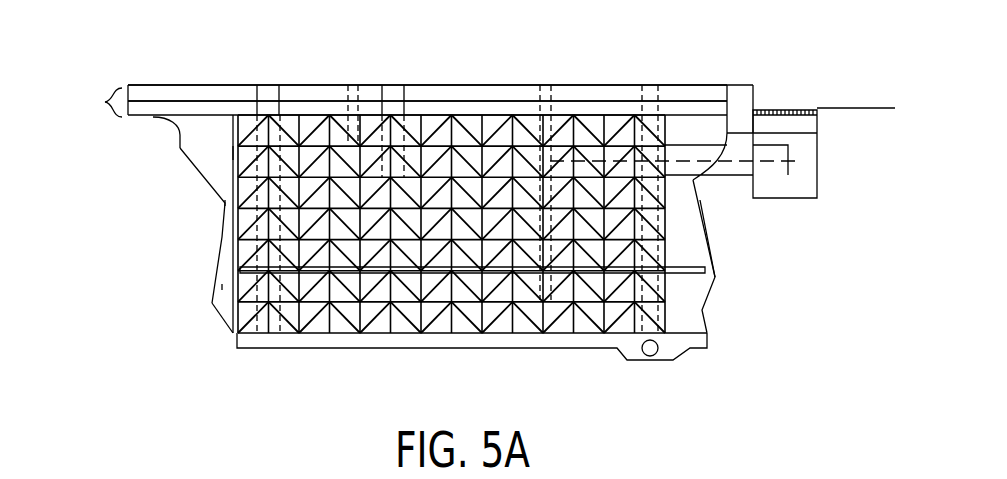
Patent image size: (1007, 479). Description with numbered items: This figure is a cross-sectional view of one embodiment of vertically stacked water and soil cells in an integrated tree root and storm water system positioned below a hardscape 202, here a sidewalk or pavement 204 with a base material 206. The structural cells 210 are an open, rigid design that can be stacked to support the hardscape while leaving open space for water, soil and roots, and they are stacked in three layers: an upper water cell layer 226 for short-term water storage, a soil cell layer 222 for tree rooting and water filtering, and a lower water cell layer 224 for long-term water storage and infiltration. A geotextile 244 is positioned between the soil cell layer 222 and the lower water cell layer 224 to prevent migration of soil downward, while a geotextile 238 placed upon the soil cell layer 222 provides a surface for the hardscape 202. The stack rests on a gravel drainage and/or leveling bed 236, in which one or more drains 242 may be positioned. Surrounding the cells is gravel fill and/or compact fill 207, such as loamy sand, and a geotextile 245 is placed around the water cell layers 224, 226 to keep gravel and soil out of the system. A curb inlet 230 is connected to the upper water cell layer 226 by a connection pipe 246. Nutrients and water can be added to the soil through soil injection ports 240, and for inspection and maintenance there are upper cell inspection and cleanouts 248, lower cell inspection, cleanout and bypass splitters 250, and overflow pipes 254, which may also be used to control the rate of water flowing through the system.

The hardscape 202 is at (407, 108).
The sidewalk or pavement 204 is at (232, 92).
The base material 206 is at (187, 103).
The gravel fill and/or compact fill 207 is at (210, 143).
The structural cells 210 is at (498, 323).
The soil cell layer 222 is at (220, 253).
The lower water cell layer 224 is at (215, 305).
The upper water cell layer 226 is at (233, 152).
The curb inlet 230 is at (780, 108).
The gravel drainage and/or leveling bed 236 is at (250, 338).
The geotextile 238 is at (153, 117).
The soil injection ports 240 is at (546, 85).
The drains 242 is at (652, 350).
The geotextile 244 is at (715, 268).
The geotextile 245 is at (225, 203).
The connection pipe 246 is at (725, 172).
The upper cell inspection and cleanouts 248 is at (393, 85).
The lower cell inspection, cleanout and bypass splitters 250 is at (268, 85).
The overflow pipes 254 is at (650, 85).